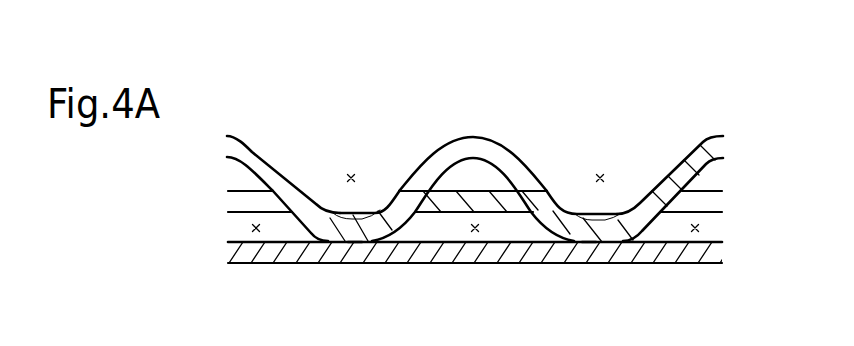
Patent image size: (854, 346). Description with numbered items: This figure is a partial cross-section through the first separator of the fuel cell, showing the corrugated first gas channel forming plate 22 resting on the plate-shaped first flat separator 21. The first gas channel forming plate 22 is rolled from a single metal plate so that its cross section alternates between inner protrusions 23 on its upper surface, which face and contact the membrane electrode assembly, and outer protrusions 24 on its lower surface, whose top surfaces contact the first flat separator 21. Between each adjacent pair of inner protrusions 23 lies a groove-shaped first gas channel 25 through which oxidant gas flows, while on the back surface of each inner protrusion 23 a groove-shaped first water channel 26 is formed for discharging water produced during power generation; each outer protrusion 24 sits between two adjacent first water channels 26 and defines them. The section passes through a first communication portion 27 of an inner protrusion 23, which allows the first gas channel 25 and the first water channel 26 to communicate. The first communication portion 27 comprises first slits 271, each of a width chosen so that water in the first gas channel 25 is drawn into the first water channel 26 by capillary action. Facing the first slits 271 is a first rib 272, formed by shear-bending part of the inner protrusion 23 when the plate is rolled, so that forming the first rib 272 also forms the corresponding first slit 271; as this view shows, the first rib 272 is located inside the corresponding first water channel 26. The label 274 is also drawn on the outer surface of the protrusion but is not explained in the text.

The first flat separator 21 is at (630, 265).
The first gas channel forming plate 22 is at (722, 136).
The inner protrusion 23 is at (248, 136).
The outer protrusion 24 is at (353, 243).
The first gas channel 25 is at (351, 174).
The first water channel 26 is at (257, 232).
The first communication portion 27 is at (481, 152).
The first slit 271 is at (510, 160).
The first rib 272 is at (445, 198).
The outer surface 274 is at (472, 135).